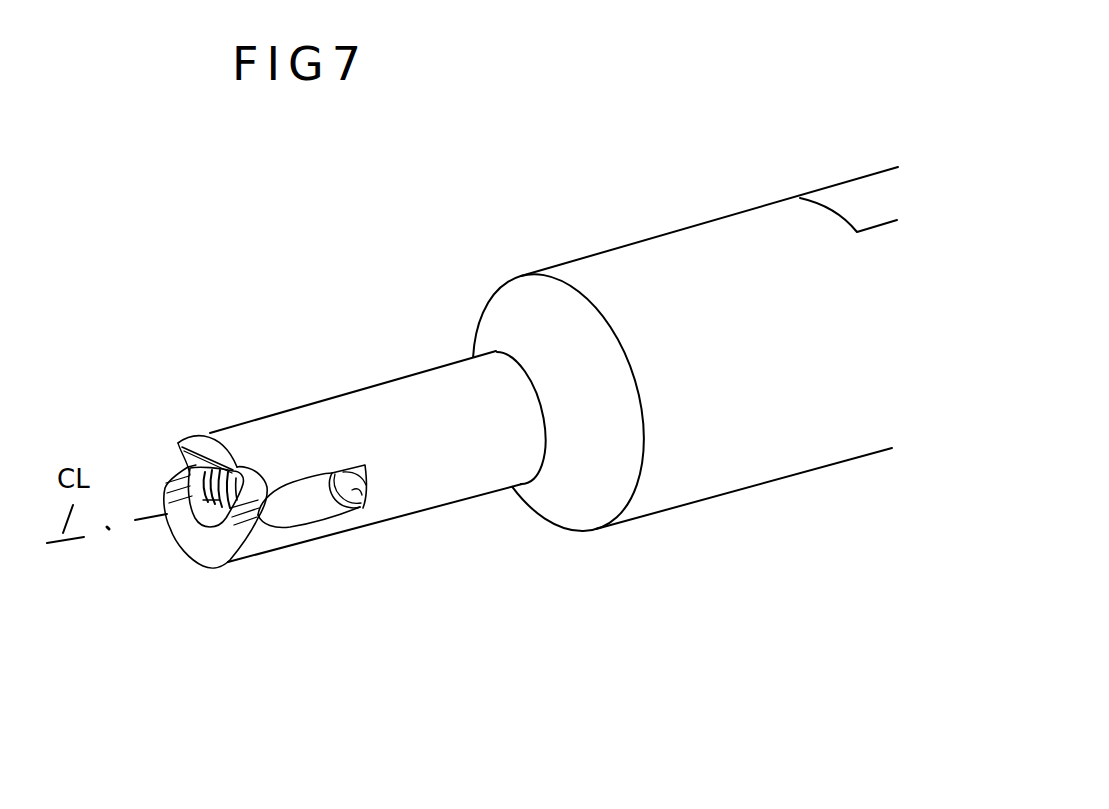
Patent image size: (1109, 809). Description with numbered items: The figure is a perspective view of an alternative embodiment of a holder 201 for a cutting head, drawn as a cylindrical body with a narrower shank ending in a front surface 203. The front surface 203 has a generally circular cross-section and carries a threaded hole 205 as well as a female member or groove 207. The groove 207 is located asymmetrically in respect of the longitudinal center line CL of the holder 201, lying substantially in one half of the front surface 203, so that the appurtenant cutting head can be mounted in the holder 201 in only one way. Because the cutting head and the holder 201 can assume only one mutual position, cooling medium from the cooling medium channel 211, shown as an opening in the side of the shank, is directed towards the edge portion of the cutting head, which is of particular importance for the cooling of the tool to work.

The holder 201 is at (359, 355).
The front surface 203 is at (189, 532).
The threaded hole 205 is at (210, 513).
The groove 207 is at (196, 465).
The cooling medium channel 211 is at (366, 500).